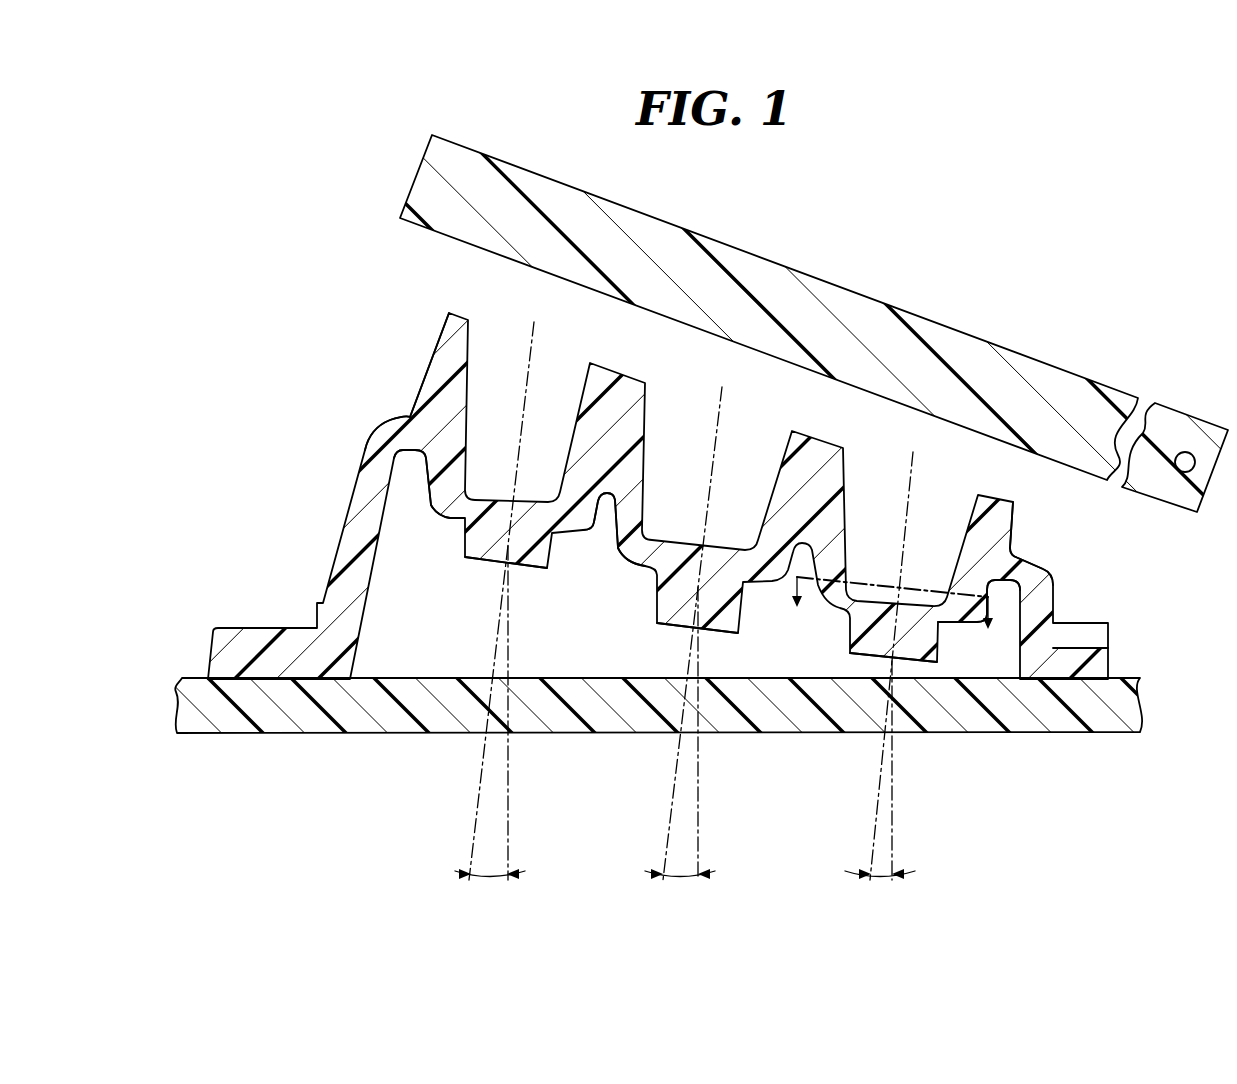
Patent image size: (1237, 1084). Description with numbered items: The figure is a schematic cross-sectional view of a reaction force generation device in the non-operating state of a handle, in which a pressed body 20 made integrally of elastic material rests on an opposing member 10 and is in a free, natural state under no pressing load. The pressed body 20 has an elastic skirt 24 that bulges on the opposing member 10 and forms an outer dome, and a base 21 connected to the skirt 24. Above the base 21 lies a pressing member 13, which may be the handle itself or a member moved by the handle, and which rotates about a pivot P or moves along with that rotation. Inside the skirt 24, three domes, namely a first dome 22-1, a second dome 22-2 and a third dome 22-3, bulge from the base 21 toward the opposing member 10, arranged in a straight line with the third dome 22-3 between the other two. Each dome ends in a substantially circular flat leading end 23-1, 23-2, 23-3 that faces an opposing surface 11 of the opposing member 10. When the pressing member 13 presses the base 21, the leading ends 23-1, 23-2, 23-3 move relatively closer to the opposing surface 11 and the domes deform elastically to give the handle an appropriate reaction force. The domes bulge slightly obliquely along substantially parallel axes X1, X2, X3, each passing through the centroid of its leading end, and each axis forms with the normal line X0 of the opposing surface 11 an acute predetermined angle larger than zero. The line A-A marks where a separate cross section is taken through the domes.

The opposing member 10 is at (258, 731).
The opposing surface 11 is at (537, 676).
The pressing member 13 is at (842, 289).
The pressed body 20 is at (329, 364).
The base 21 is at (441, 304).
The first dome 22-1 is at (975, 625).
The second dome 22-2 is at (427, 504).
The third dome 22-3 is at (613, 552).
The leading end 23-1 is at (866, 658).
The leading end 23-2 is at (480, 562).
The leading end 23-3 is at (667, 628).
The elastic skirt 24 is at (363, 455).
The pivot P is at (1186, 452).
The line A- A is at (891, 606).
The normal line X0 is at (510, 828).
The axis of the first dome X1 is at (874, 822).
The axis of the second dome X2 is at (475, 822).
The axis of the third dome X3 is at (668, 822).